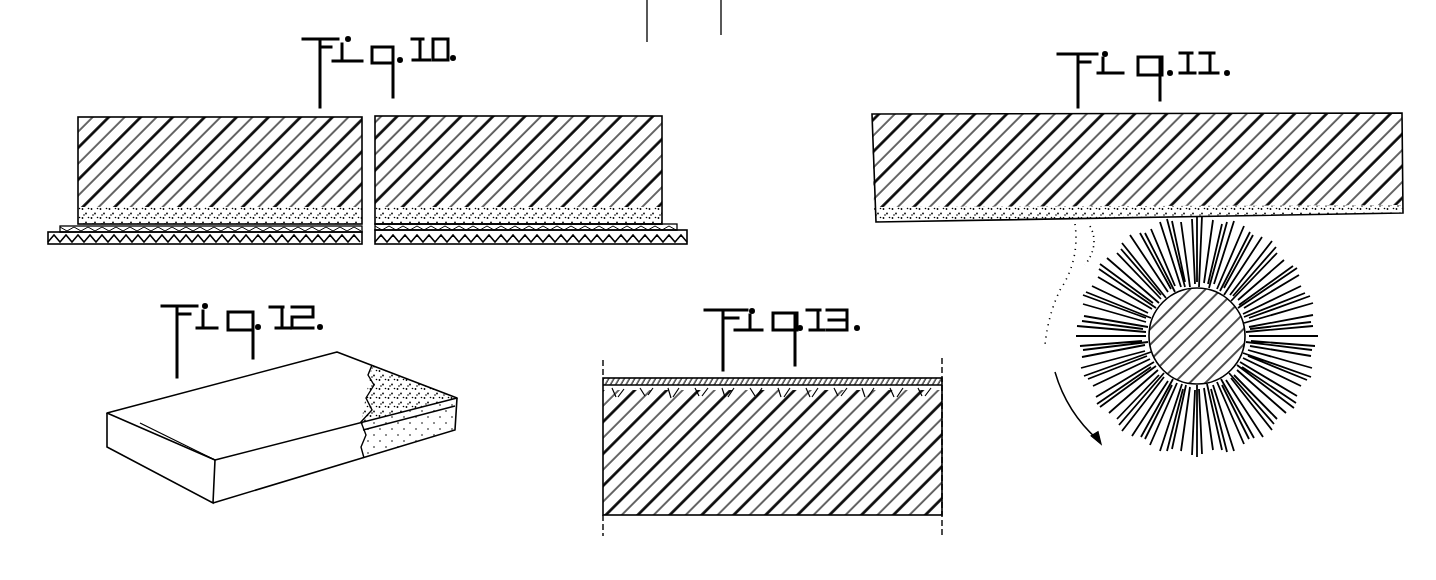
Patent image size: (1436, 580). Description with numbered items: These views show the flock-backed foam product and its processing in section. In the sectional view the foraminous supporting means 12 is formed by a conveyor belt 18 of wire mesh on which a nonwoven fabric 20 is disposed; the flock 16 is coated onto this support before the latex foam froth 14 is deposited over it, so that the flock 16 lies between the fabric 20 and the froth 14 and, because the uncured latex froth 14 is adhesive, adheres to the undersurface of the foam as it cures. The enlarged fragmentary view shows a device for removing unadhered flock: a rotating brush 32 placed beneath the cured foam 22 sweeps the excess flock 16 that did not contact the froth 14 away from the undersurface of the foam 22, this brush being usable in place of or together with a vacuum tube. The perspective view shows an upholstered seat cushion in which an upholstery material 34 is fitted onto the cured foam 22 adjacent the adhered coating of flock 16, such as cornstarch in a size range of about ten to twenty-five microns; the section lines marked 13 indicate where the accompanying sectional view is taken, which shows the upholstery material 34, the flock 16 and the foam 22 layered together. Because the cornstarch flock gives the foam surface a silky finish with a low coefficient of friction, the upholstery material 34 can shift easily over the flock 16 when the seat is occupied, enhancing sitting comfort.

In FIG. 10, the foraminous supporting means 12 is at (520, 243).
In FIG. 12, the section line direction 13 is at (177, 410).
In FIG. 10, the latex foam froth 14 is at (662, 135).
In FIG. 10, the flock 16 is at (640, 210).
In FIG. 11, the flock 16 is at (1083, 248).
In FIG. 13, the flock 16 is at (670, 388).
In FIG. 10, the conveyor belt 18 is at (578, 243).
In FIG. 10, the nonwoven fabric 20 is at (673, 225).
In FIG. 11, the cured foam 22 is at (1345, 130).
In FIG. 12, the cured foam 22 is at (407, 390).
In FIG. 13, the cured foam 22 is at (928, 437).
In FIG. 11, the rotating brush 32 is at (1160, 447).
In FIG. 12, the upholstery material 34 is at (170, 405).
In FIG. 13, the upholstery material 34 is at (643, 378).